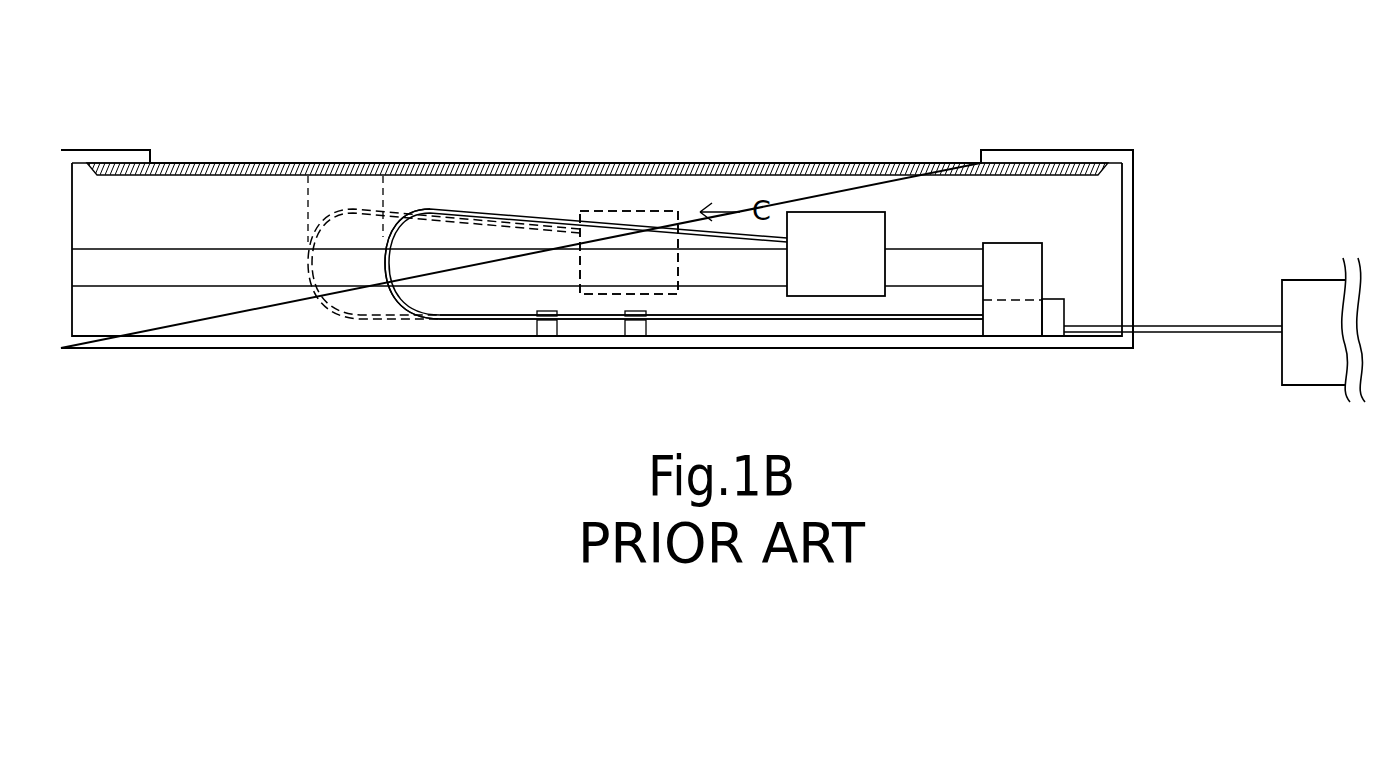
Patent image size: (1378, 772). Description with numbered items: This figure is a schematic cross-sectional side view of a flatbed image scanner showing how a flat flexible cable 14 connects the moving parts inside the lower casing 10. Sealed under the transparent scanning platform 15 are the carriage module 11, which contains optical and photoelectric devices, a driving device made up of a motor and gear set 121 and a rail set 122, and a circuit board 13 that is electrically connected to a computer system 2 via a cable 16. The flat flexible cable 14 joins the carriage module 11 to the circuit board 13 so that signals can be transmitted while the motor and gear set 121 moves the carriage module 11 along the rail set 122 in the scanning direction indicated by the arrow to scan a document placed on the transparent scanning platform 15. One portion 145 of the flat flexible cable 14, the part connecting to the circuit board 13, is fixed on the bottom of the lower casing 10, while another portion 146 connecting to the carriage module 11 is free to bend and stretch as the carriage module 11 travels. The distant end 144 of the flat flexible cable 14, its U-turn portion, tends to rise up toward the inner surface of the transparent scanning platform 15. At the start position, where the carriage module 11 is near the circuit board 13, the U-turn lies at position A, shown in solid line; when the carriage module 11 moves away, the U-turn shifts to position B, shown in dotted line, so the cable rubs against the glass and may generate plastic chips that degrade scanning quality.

The computer system 2 is at (1305, 292).
The lower casing 10 is at (1103, 227).
The carriage module 11 is at (653, 212).
The circuit board 13 is at (1053, 317).
The flat flexible cable 14 is at (308, 247).
The transparent scanning platform 15 is at (778, 163).
The cable 16 is at (1165, 325).
The motor and gear set 121 is at (1013, 283).
The rail set 122 is at (937, 263).
The distant end 144 is at (407, 218).
The portion 145 is at (585, 320).
The portion 146 is at (607, 222).